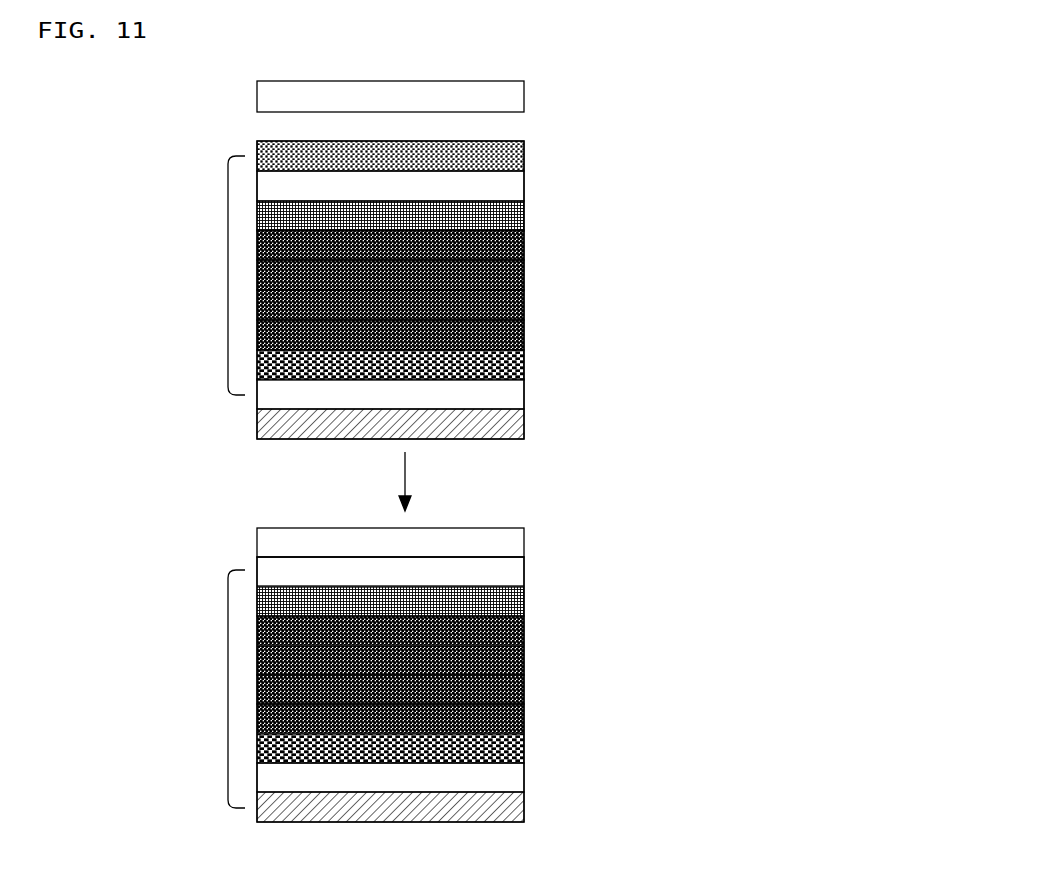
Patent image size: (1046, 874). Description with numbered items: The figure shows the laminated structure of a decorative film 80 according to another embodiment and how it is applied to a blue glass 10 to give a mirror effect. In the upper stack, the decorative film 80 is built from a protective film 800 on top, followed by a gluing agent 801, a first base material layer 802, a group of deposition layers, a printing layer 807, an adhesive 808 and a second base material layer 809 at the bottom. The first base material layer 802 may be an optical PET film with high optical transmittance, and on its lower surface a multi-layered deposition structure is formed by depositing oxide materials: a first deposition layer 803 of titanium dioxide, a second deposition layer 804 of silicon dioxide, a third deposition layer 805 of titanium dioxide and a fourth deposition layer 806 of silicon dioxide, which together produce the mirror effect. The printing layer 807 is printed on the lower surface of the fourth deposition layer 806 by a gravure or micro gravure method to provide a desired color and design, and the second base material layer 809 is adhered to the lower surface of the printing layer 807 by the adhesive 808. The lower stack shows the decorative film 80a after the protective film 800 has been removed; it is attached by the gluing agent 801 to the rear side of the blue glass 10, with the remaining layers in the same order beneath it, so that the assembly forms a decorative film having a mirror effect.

The blue glass 10 is at (526, 96).
The decorative film 80 is at (228, 257).
The decorative film having protective film removed 80a is at (226, 680).
The protective film 800 is at (526, 156).
The gluing agent 801 is at (526, 186).
The first base material layer 802 is at (526, 216).
The first deposition layer 803 is at (526, 245).
The second deposition layer 804 is at (526, 275).
The third deposition layer 805 is at (526, 305).
The fourth deposition layer 806 is at (526, 335).
The printing layer 807 is at (526, 364).
The adhesive 808 is at (526, 394).
The second base material layer 809 is at (526, 424).